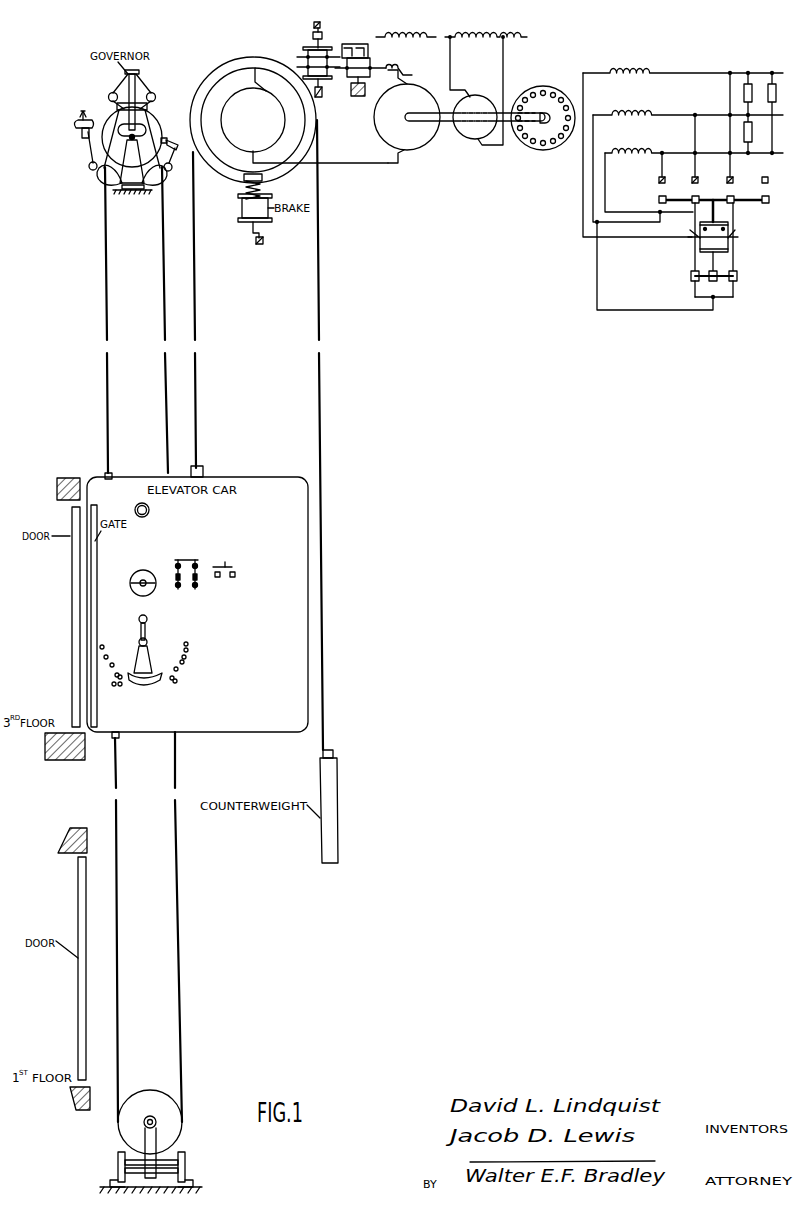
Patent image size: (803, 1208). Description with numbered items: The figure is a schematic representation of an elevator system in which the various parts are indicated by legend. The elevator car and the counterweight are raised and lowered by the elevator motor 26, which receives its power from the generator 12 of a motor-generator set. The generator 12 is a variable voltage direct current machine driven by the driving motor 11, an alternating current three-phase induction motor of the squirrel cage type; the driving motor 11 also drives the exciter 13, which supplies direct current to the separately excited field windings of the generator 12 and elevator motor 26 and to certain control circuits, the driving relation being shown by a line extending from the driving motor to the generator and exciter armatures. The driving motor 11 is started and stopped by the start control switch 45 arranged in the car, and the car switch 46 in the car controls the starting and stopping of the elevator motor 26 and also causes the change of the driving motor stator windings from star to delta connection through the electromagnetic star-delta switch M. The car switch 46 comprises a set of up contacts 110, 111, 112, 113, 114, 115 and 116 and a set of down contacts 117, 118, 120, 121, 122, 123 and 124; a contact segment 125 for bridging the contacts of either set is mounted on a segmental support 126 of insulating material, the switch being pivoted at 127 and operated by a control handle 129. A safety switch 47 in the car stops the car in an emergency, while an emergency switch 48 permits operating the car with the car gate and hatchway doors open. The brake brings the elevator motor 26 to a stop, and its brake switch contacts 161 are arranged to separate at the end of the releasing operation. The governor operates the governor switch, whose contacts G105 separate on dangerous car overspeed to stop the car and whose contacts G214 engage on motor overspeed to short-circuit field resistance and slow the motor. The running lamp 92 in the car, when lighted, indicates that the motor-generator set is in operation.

The driving motor 11 is at (545, 85).
The generator 12 is at (425, 75).
The exciter 13 is at (481, 75).
The elevator motor 26 is at (261, 141).
The brake switch contacts 161 is at (259, 244).
The governor switch contacts G105 is at (84, 140).
The governor switch contacts G214 is at (168, 136).
The star-delta switch M is at (683, 189).
The running lamp 92 is at (150, 510).
The start control switch 45 is at (150, 563).
The car switch 46 is at (287, 630).
The safety switch 47 is at (193, 558).
The emergency switch 48 is at (233, 567).
The up contact 110 is at (120, 686).
The up contact 111 is at (113, 686).
The up contact 112 is at (118, 678).
The up contact 113 is at (118, 673).
The up contact 114 is at (112, 663).
The up contact 115 is at (106, 655).
The up contact 116 is at (102, 645).
The down contact 117 is at (172, 681).
The down contact 118 is at (177, 684).
The down contact 120 is at (178, 671).
The down contact 121 is at (184, 663).
The down contact 122 is at (187, 657).
The down contact 123 is at (189, 649).
The down contact 124 is at (189, 644).
The contact segment 125 is at (145, 684).
The segmental support 126 is at (151, 658).
The pivot 127 is at (148, 640).
The control handle 129 is at (148, 618).